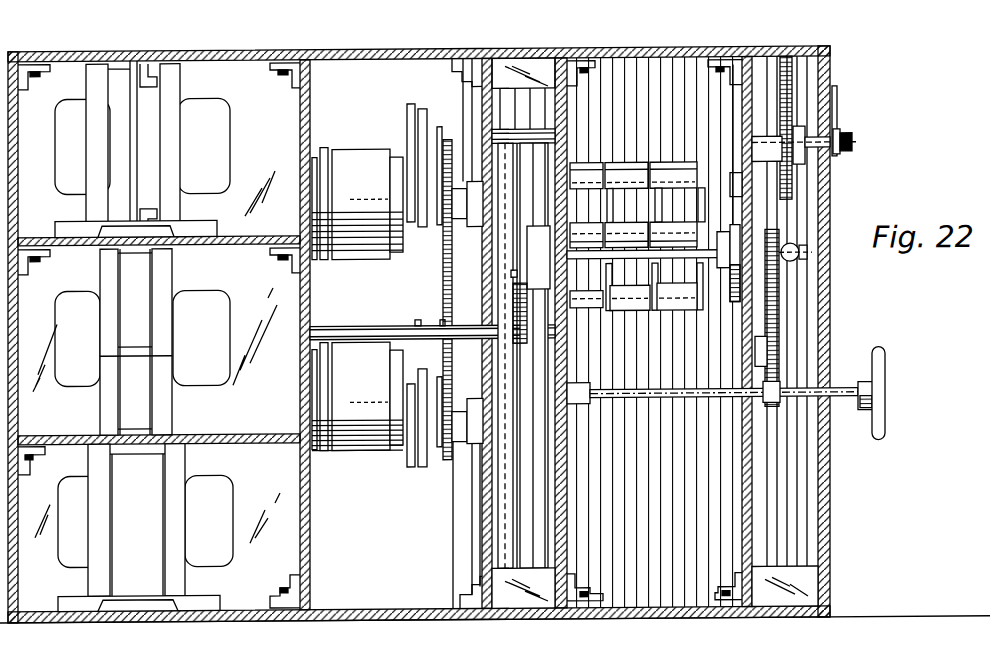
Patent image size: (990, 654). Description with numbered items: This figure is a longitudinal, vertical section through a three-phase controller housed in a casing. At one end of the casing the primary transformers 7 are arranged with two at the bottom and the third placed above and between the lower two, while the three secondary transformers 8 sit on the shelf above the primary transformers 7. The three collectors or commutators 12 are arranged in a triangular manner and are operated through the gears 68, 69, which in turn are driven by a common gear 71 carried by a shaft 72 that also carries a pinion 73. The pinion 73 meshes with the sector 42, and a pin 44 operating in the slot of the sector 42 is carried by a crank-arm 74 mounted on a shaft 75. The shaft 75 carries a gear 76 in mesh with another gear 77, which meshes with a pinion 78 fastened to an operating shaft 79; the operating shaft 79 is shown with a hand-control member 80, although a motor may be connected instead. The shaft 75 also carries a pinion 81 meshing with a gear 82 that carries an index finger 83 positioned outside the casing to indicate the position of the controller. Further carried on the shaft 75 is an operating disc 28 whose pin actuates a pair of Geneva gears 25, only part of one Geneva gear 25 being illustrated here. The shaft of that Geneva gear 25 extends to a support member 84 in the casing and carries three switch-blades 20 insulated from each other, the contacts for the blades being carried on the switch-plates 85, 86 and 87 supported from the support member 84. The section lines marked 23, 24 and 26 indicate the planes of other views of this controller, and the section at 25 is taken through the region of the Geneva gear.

The primary transformer 7 is at (220, 325).
The secondary transformer 8 is at (215, 140).
The collector or commutator 12 is at (360, 360).
The switch-blade 20 is at (667, 171).
The section line 23 is at (850, 313).
The section line 24 is at (342, 400).
The Geneva gear 25 is at (428, 300).
The section line 26 is at (500, 62).
The operating disc 28 is at (738, 312).
The sector 42 is at (517, 188).
The pin 44 is at (511, 278).
The gear 68 is at (445, 465).
The gear 69 is at (452, 150).
The common gear 71 is at (455, 378).
The shaft 72 is at (562, 338).
The pinion 73 is at (520, 350).
The crank-arm 74 is at (531, 302).
The shaft 75 is at (676, 290).
The gear 76 is at (778, 306).
The gear 77 is at (777, 353).
The pinion 78 is at (778, 413).
The operating shaft 79 is at (855, 404).
The hand-control member 80 is at (885, 413).
The pinion 81 is at (802, 265).
The gear 82 is at (795, 73).
The index finger 83 is at (838, 123).
The support member 84 is at (562, 481).
The switch-plate 85 is at (611, 166).
The switch-plate 86 is at (657, 166).
The switch-plate 87 is at (699, 166).